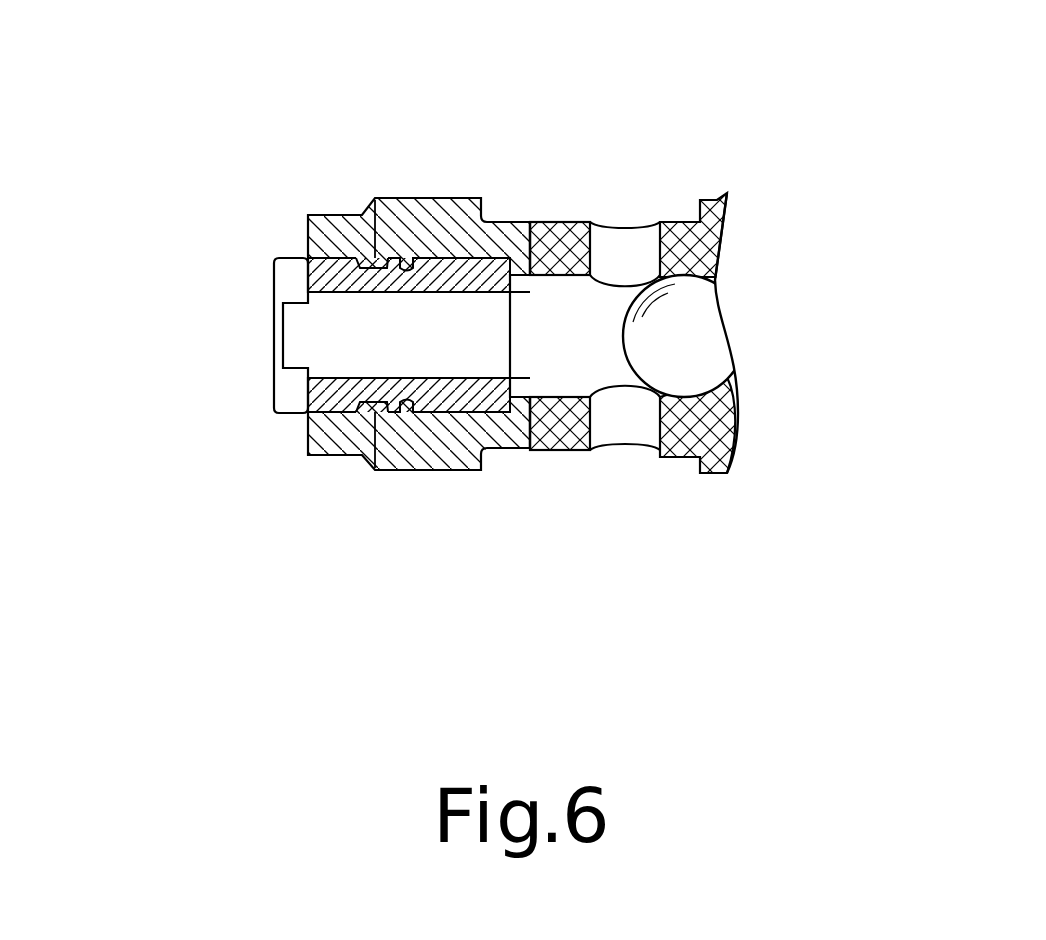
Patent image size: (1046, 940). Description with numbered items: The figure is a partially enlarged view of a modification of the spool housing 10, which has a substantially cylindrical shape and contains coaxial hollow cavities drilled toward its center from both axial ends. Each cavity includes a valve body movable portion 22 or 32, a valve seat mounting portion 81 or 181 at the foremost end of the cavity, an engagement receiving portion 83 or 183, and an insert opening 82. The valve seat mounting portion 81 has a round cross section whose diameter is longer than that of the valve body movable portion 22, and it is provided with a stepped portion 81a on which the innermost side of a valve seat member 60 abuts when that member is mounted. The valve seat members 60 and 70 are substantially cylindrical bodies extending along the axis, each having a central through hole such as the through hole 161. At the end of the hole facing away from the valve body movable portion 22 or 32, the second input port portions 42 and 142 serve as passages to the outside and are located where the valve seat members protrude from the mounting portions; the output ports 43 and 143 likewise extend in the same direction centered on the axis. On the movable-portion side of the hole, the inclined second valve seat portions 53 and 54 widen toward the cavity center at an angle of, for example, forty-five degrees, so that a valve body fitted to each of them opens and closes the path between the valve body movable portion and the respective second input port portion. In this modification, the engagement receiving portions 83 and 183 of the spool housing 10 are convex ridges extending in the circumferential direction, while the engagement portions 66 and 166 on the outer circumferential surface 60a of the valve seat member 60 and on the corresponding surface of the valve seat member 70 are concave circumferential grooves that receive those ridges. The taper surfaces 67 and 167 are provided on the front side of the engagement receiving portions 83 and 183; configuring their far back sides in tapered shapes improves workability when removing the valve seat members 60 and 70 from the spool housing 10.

The spool housing 10 is at (448, 178).
The valve body movable portion 22 is at (603, 313).
The valve body movable portion 32 is at (654, 303).
The second input port portion 42 is at (272, 404).
The second input port portion 142 is at (291, 374).
The output port 43 is at (636, 217).
The output port 143 is at (625, 418).
The second valve seat portion 53 is at (536, 365).
The second valve seat portion 54 is at (632, 425).
The valve seat member 60 is at (345, 406).
The valve seat member 70 is at (409, 395).
The outer circumferential surface 60a is at (501, 439).
The engagement portion 66 is at (352, 282).
The engagement portion 166 is at (372, 407).
The taper surface 67 is at (360, 416).
The taper surface 167 is at (449, 404).
The valve seat mounting portion 81 is at (503, 276).
The valve seat mounting portion 181 is at (452, 433).
The stepped portion 81a is at (528, 262).
The insert opening 82 is at (321, 280).
The engagement receiving portion 83 is at (381, 280).
The engagement receiving portion 183 is at (341, 436).
The through hole 161 is at (446, 369).